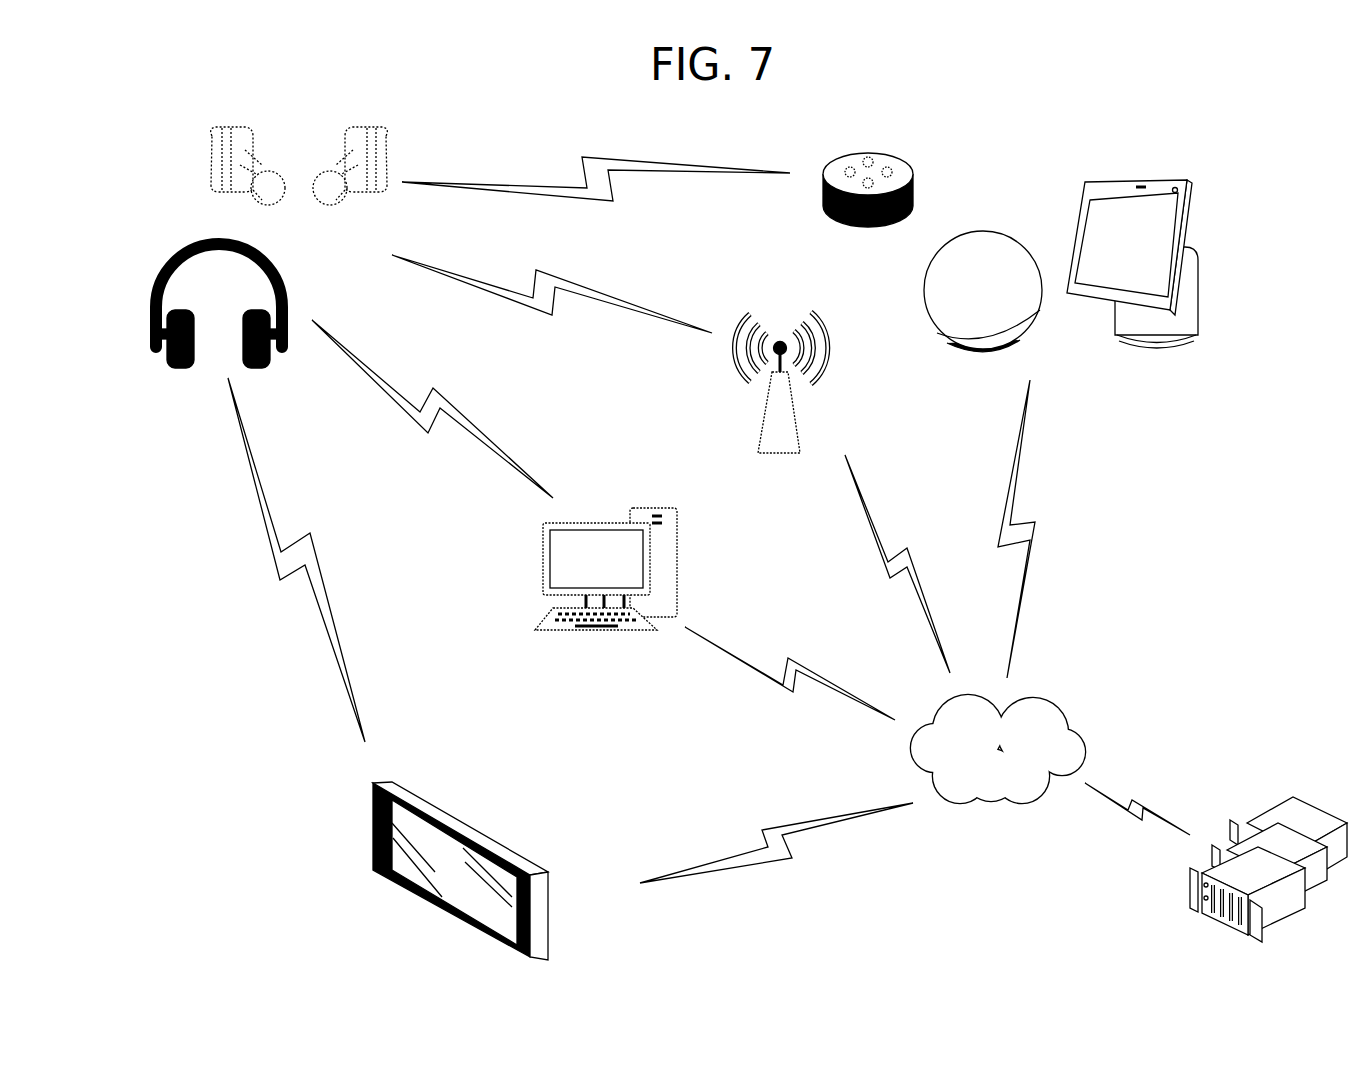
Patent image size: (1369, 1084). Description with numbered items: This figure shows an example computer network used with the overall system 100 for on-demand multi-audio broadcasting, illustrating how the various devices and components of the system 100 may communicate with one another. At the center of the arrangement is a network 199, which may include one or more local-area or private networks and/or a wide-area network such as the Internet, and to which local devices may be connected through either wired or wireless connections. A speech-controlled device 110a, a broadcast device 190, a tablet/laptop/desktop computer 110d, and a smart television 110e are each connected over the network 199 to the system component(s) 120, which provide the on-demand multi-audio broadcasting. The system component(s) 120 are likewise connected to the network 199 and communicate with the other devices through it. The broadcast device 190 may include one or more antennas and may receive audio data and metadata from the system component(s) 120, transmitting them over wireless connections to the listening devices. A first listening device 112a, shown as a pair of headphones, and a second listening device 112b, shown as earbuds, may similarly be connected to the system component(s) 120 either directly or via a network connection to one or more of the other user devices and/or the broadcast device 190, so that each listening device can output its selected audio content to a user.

The system 100 is at (1252, 113).
The second listening device 112b is at (200, 123).
The first listening device 112a is at (148, 287).
The speech-controlled device 110a is at (988, 225).
The broadcast device 190 is at (742, 418).
The tablet/laptop/desktop computer 110d is at (530, 563).
The smart television 110e is at (497, 830).
The network 199 is at (998, 749).
The system component(s) 120 is at (1253, 802).